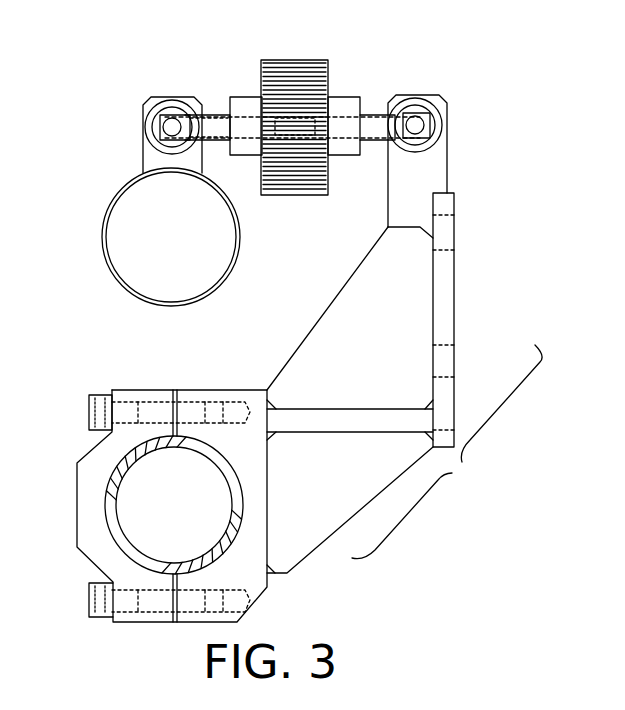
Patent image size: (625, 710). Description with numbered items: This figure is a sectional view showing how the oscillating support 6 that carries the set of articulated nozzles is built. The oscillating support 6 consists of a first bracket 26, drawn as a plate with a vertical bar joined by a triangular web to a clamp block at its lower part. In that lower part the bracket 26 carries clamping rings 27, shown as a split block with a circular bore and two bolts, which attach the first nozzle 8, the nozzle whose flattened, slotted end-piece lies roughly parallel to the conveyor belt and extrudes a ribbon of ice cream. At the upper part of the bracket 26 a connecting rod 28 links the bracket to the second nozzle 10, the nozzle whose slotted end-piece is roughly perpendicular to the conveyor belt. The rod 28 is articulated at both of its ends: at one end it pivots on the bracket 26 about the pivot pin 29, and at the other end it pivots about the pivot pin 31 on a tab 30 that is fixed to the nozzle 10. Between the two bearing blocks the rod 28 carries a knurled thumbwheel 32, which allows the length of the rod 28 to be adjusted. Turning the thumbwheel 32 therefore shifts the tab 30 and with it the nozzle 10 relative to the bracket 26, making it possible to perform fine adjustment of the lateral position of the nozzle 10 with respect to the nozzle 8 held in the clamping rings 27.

The oscillating support 6 is at (462, 462).
The first nozzle 8 is at (105, 506).
The second nozzle 10 is at (102, 236).
The first bracket 26 is at (405, 280).
The clamping rings 27 is at (90, 448).
The connecting rod 28 is at (218, 112).
The pivot pin 29 is at (444, 126).
The tab 30 is at (143, 150).
The pivot pin 31 is at (150, 122).
The thumbwheel 32 is at (295, 59).